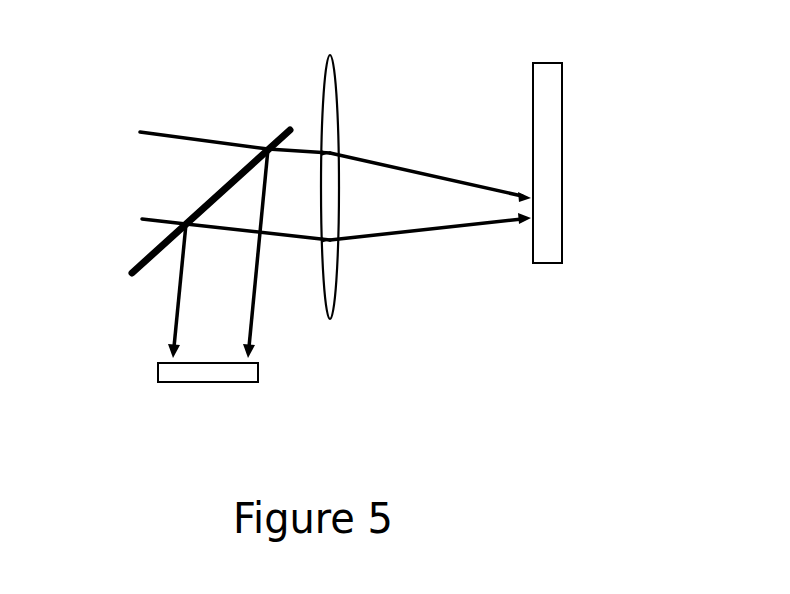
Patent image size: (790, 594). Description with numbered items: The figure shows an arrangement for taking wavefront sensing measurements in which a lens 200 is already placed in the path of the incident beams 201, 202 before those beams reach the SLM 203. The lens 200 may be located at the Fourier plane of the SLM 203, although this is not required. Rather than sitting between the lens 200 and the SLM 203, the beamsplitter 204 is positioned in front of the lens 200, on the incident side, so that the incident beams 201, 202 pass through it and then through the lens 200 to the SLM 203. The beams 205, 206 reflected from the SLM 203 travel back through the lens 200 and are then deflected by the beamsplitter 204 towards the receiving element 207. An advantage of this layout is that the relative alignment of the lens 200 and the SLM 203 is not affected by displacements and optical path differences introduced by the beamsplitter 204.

The lens 200 is at (331, 113).
The incident beam 201 is at (178, 131).
The incident beam 202 is at (160, 214).
The SLM 203 is at (541, 86).
The beamsplitter 204 is at (130, 264).
The reflected beam 205 is at (160, 329).
The reflected beam 206 is at (245, 316).
The receiving element 207 is at (157, 372).